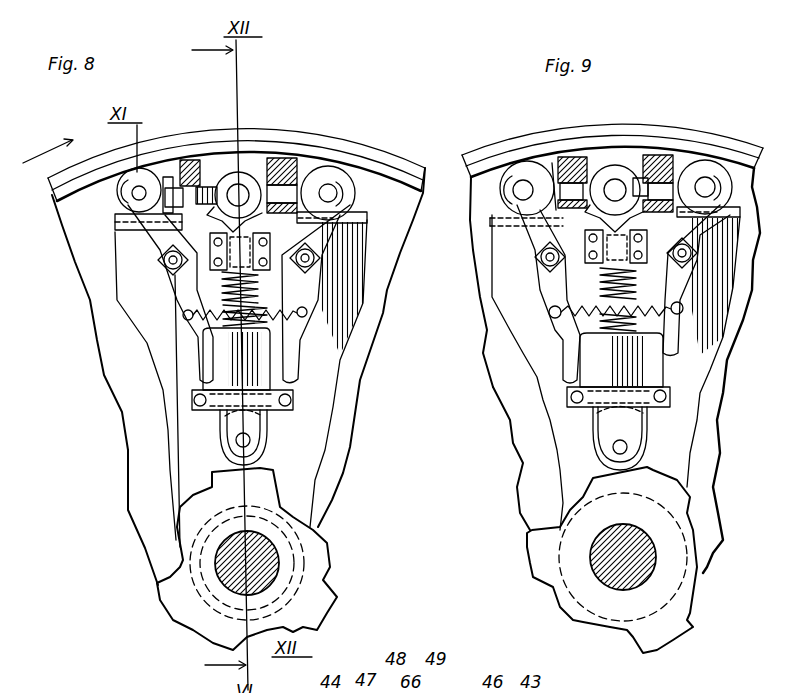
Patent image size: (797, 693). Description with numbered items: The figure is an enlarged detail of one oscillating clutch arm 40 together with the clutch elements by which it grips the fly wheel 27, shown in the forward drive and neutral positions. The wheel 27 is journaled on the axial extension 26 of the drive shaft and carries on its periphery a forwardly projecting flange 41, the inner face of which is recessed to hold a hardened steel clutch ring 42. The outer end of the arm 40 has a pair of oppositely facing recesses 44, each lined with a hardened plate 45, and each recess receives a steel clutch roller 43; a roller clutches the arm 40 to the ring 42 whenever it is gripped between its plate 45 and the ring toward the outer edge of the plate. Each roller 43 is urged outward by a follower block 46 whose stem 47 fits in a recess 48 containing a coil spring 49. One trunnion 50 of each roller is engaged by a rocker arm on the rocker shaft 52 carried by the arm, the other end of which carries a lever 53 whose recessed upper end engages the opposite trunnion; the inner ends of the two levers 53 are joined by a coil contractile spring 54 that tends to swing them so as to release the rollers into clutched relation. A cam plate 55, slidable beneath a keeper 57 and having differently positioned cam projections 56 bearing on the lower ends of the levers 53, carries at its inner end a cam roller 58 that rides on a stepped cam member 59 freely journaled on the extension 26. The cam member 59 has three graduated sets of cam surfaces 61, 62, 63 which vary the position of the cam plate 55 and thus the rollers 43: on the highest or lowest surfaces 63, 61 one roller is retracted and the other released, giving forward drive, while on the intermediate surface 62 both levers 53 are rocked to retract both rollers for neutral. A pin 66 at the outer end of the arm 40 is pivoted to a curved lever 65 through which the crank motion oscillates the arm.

In FIG. 8, the axial extension 26 is at (213, 570).
In FIG. 9, the axial extension 26 is at (653, 570).
In FIG. 8, the fly wheel 27 is at (100, 348).
In FIG. 9, the fly wheel 27 is at (718, 420).
In FIG. 8, the oscillating clutch arm 40 is at (310, 420).
In FIG. 9, the oscillating clutch arm 40 is at (565, 445).
In FIG. 8, the flange 41 is at (52, 184).
In FIG. 9, the flange 41 is at (728, 135).
In FIG. 8, the clutch ring 42 is at (55, 199).
In FIG. 9, the clutch ring 42 is at (497, 155).
In FIG. 8, the clutch roller 43 is at (345, 180).
In FIG. 9, the clutch roller 43 is at (700, 165).
In FIG. 8, the recess 44 is at (300, 172).
In FIG. 9, the recess 44 is at (552, 163).
In FIG. 8, the plate 45 is at (340, 212).
In FIG. 9, the plate 45 is at (470, 158).
In FIG. 8, the follower block 46 is at (163, 173).
In FIG. 9, the follower block 46 is at (680, 160).
In FIG. 8, the stem 47 is at (188, 160).
In FIG. 9, the stem 47 is at (573, 157).
In FIG. 8, the recess 48 is at (204, 187).
In FIG. 9, the recess 48 is at (672, 218).
In FIG. 8, the coil spring 49 is at (280, 170).
In FIG. 9, the coil spring 49 is at (640, 183).
In FIG. 8, the trunnion 50 is at (115, 205).
In FIG. 9, the trunnion 50 is at (507, 204).
In FIG. 8, the rocker shaft 52 is at (165, 266).
In FIG. 9, the rocker shaft 52 is at (543, 263).
In FIG. 8, the lever 53 is at (317, 280).
In FIG. 9, the lever 53 is at (548, 298).
In FIG. 8, the coil contractile spring 54 is at (192, 333).
In FIG. 9, the coil contractile spring 54 is at (567, 327).
In FIG. 8, the cam plate 55 is at (262, 293).
In FIG. 9, the cam plate 55 is at (633, 283).
In FIG. 8, the cam projection 56 is at (197, 350).
In FIG. 9, the cam projection 56 is at (583, 343).
In FIG. 8, the keeper 57 is at (195, 405).
In FIG. 9, the keeper 57 is at (672, 400).
In FIG. 8, the cam roller 58 is at (267, 448).
In FIG. 9, the cam roller 58 is at (642, 443).
In FIG. 8, the stepped cam member 59 is at (325, 545).
In FIG. 9, the stepped cam member 59 is at (563, 580).
In FIG. 8, the cam surface 61 is at (157, 552).
In FIG. 9, the cam surface 61 is at (577, 503).
In FIG. 8, the cam surface 62 is at (193, 495).
In FIG. 9, the cam surface 62 is at (630, 473).
In FIG. 8, the cam surface 63 is at (230, 475).
In FIG. 9, the cam surface 63 is at (673, 480).
In FIG. 8, the curved lever 65 is at (213, 215).
In FIG. 9, the curved lever 65 is at (607, 209).
In FIG. 8, the pin 66 is at (242, 187).
In FIG. 9, the pin 66 is at (613, 186).